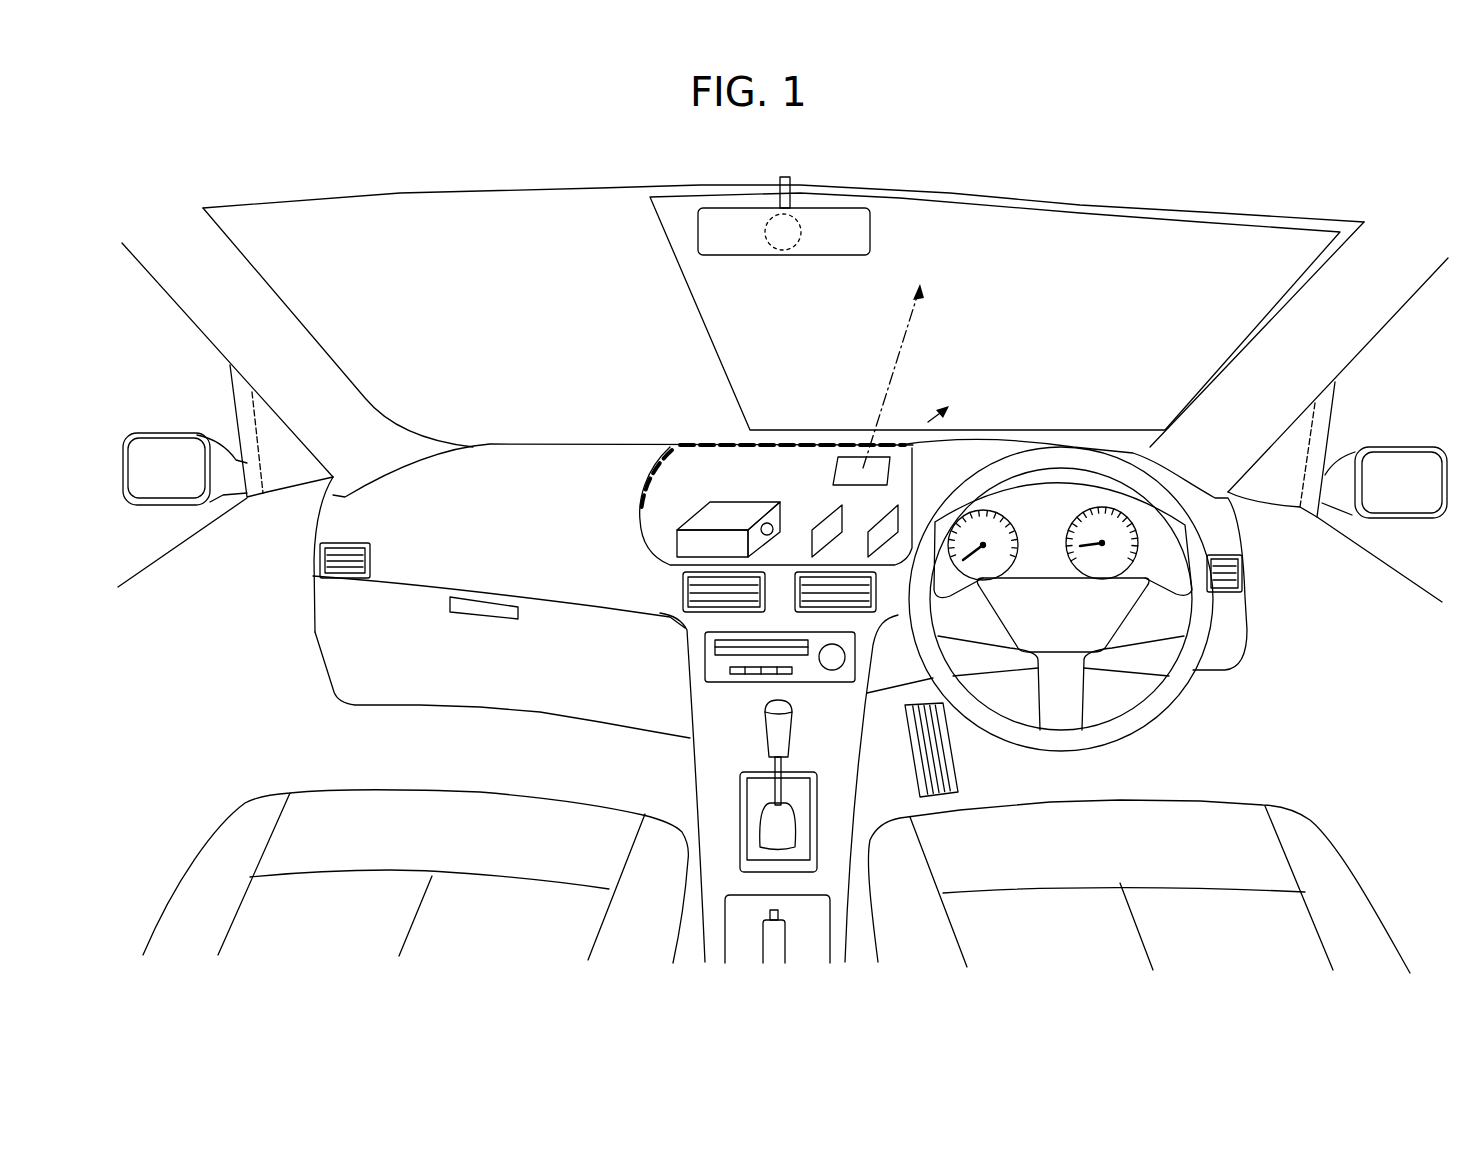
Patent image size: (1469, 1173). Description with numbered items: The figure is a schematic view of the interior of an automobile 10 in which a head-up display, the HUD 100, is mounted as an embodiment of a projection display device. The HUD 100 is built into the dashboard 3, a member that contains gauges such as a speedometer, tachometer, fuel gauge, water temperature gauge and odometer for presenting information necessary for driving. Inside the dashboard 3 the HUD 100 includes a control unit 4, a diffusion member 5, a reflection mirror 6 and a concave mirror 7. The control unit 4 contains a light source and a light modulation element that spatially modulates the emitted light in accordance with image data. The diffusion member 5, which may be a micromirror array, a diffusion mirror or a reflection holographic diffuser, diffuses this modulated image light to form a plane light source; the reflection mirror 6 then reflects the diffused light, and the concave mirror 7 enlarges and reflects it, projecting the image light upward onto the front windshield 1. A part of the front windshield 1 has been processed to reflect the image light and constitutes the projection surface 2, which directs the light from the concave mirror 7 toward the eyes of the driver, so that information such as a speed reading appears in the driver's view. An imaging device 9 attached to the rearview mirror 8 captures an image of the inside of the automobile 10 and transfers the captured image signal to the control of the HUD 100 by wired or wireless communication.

The front windshield 1 is at (416, 206).
The projection surface 2 is at (683, 277).
The dashboard 3 is at (585, 450).
The control unit 4 is at (720, 507).
The diffusion member 5 is at (820, 527).
The reflection mirror 6 is at (880, 527).
The concave mirror 7 is at (853, 458).
The rearview mirror 8 is at (714, 207).
The imaging device 9 is at (797, 226).
The automobile 10 is at (944, 178).
The head-up display (HUD) 100 is at (695, 424).